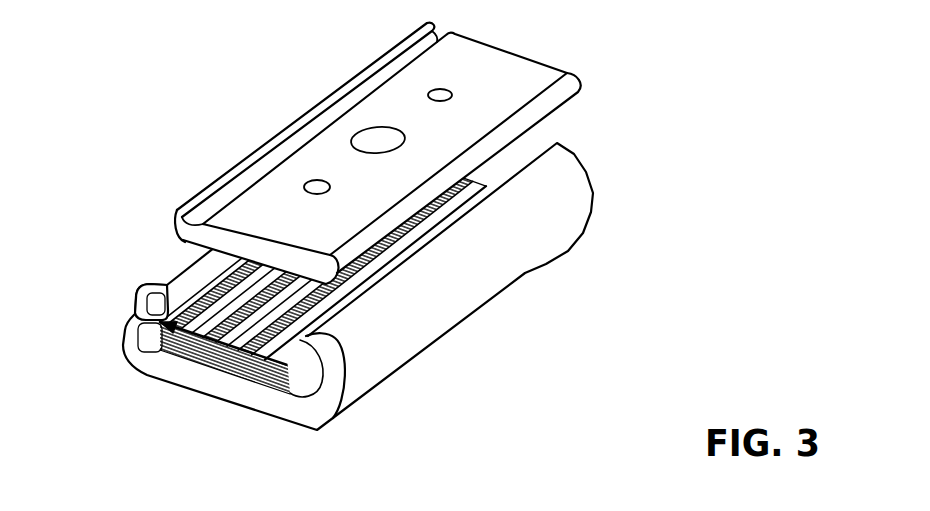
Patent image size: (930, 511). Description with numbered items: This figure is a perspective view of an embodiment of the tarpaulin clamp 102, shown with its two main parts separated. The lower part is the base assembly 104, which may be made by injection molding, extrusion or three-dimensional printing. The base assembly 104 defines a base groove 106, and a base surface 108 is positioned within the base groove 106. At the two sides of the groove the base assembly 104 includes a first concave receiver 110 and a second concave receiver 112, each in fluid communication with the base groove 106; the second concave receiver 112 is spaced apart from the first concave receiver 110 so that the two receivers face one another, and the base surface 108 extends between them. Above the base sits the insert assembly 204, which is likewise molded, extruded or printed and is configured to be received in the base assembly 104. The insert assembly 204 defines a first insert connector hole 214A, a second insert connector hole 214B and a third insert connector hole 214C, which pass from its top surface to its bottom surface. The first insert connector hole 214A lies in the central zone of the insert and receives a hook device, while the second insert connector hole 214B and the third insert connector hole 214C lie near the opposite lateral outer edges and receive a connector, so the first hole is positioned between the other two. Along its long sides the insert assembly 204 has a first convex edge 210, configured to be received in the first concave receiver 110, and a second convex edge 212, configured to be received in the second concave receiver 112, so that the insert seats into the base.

The tarpaulin clamp 102 is at (783, 173).
The base assembly 104 is at (596, 200).
The base groove 106 is at (258, 366).
The base surface 108 is at (186, 345).
The first concave receiver 110 is at (300, 381).
The second concave receiver 112 is at (136, 306).
The insert assembly 204 is at (527, 53).
The first convex edge 210 is at (556, 101).
The second convex edge 212 is at (208, 180).
The first insert connector hole 214A is at (351, 138).
The second insert connector hole 214B is at (427, 92).
The third insert connector hole 214C is at (305, 185).